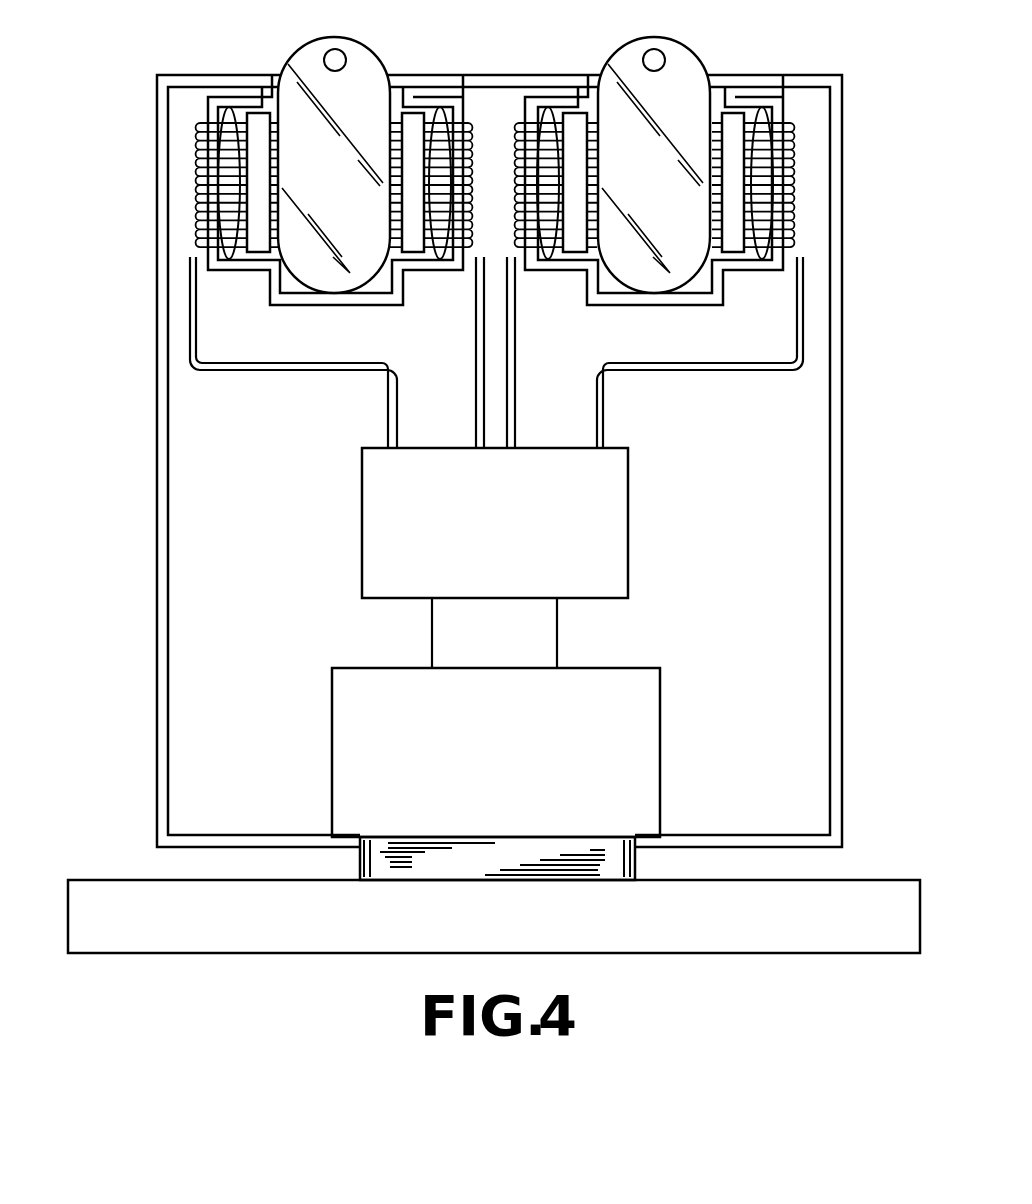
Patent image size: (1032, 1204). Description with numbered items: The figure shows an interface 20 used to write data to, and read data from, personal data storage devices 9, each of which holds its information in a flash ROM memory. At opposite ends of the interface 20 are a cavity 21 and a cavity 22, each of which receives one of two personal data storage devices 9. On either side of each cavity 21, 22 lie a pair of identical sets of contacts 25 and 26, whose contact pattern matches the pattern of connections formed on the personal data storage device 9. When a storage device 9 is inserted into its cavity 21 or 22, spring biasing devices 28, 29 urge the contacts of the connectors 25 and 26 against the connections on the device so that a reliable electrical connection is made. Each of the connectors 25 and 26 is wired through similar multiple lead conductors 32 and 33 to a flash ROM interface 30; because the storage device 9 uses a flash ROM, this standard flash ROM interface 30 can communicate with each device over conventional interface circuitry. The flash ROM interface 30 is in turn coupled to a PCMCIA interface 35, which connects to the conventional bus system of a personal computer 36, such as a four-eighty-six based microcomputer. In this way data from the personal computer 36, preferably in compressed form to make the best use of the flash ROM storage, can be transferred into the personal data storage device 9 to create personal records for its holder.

The personal data storage device 9 is at (345, 182).
The interface 20 is at (766, 630).
The cavity 21 is at (717, 77).
The cavity 22 is at (397, 77).
The set of contacts 25 is at (417, 116).
The set of contacts 26 is at (257, 116).
The spring biasing device 28 is at (450, 110).
The spring biasing device 29 is at (228, 112).
The flash ROM interface 30 is at (628, 502).
The multiple lead conductor 32 is at (475, 323).
The multiple lead conductor 33 is at (318, 371).
The PCMCIA interface 35 is at (660, 740).
The personal computer 36 is at (494, 916).